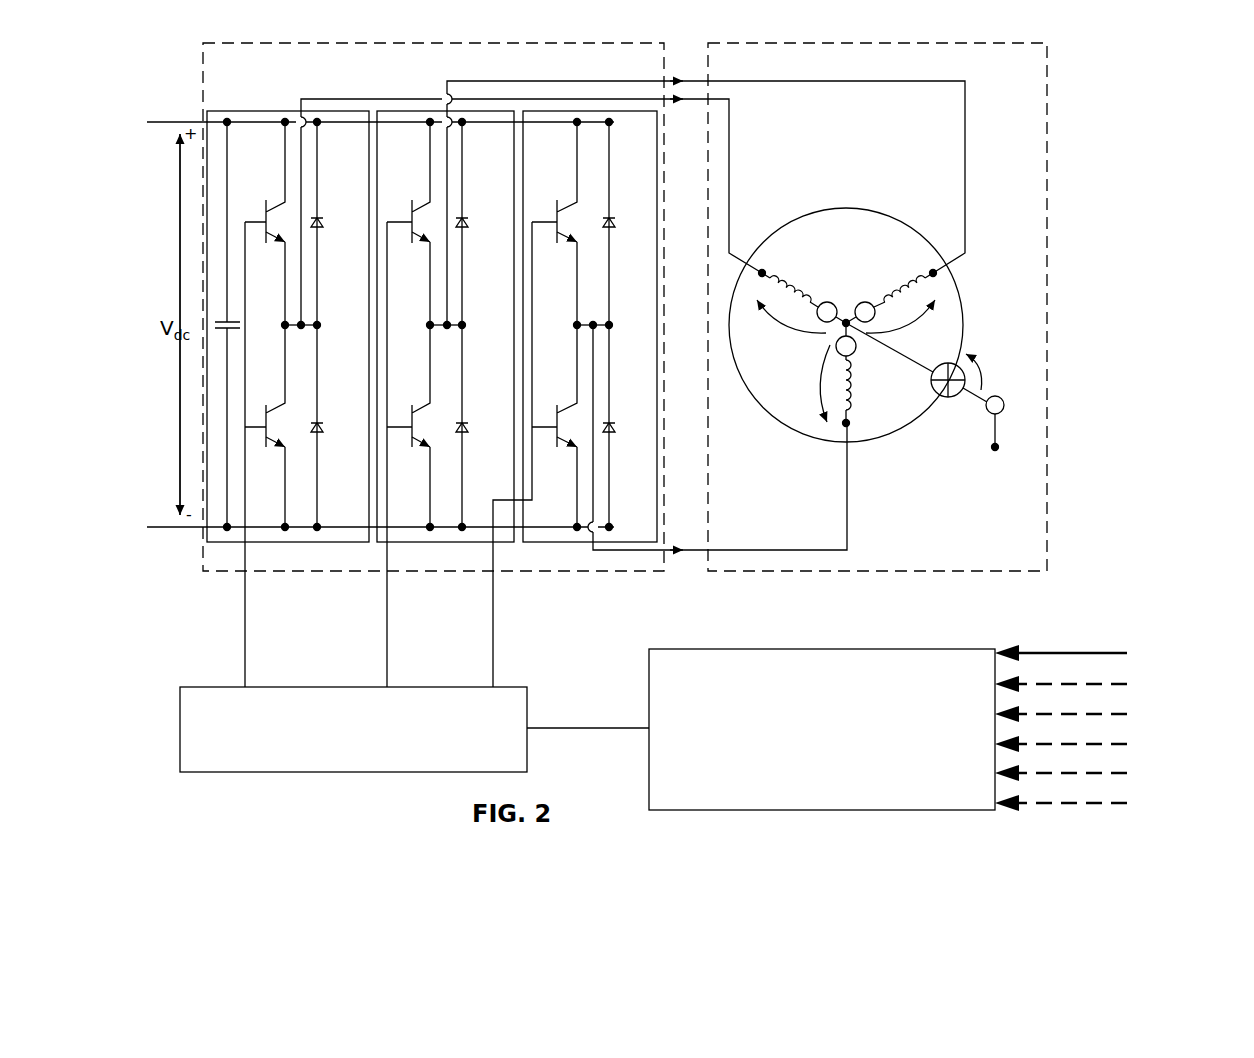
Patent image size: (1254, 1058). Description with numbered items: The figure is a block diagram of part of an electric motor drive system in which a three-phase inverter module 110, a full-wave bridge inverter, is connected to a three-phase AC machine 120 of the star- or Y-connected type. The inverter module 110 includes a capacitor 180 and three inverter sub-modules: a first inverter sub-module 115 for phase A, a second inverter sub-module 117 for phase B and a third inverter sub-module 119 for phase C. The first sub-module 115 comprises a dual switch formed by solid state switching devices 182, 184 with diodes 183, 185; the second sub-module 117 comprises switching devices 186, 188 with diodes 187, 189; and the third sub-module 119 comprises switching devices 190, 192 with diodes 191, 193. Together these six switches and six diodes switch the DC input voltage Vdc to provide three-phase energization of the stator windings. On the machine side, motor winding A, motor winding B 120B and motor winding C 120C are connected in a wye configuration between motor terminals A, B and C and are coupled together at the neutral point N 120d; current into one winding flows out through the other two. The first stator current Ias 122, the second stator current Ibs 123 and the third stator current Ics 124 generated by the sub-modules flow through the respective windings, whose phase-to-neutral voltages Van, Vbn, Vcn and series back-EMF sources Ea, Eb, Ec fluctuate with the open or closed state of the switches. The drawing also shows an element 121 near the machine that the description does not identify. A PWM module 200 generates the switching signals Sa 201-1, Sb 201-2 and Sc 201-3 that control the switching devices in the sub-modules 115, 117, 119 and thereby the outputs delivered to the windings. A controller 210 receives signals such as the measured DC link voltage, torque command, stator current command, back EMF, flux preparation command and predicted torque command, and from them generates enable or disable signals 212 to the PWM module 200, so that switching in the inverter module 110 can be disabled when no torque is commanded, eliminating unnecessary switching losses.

The three-phase inverter module 110 is at (252, 42).
The three-phase AC machine 120 is at (1005, 43).
The first inverter sub-module 115 is at (307, 543).
The second inverter sub-module 117 is at (450, 543).
The third inverter sub-module 119 is at (568, 543).
The first stator current 122 is at (731, 143).
The third stator current 124 is at (966, 123).
The second stator current 123 is at (672, 553).
The neutral point 120d is at (840, 262).
The motor winding B 120B is at (786, 288).
The motor winding C 120C is at (851, 406).
The resolver / rotor position sensor 121 is at (945, 398).
The capacitor 180 is at (228, 143).
The solid state switching device 182 is at (262, 237).
The solid state switching device 184 is at (262, 447).
The diode 183 is at (320, 218).
The diode 185 is at (320, 423).
The solid state switching device 186 is at (410, 238).
The solid state switching device 188 is at (410, 445).
The diode 187 is at (465, 218).
The diode 189 is at (465, 423).
The solid state switching device 190 is at (554, 223).
The solid state switching device 192 is at (557, 440).
The diode 191 is at (612, 218).
The diode 193 is at (612, 423).
The PWM module 200 is at (237, 687).
The switching signal Sa 201-1 is at (245, 648).
The switching signal Sb 201-2 is at (387, 648).
The switching signal Sc 201-3 is at (493, 648).
The controller 210 is at (708, 649).
The enable or disable signals 212 is at (565, 728).